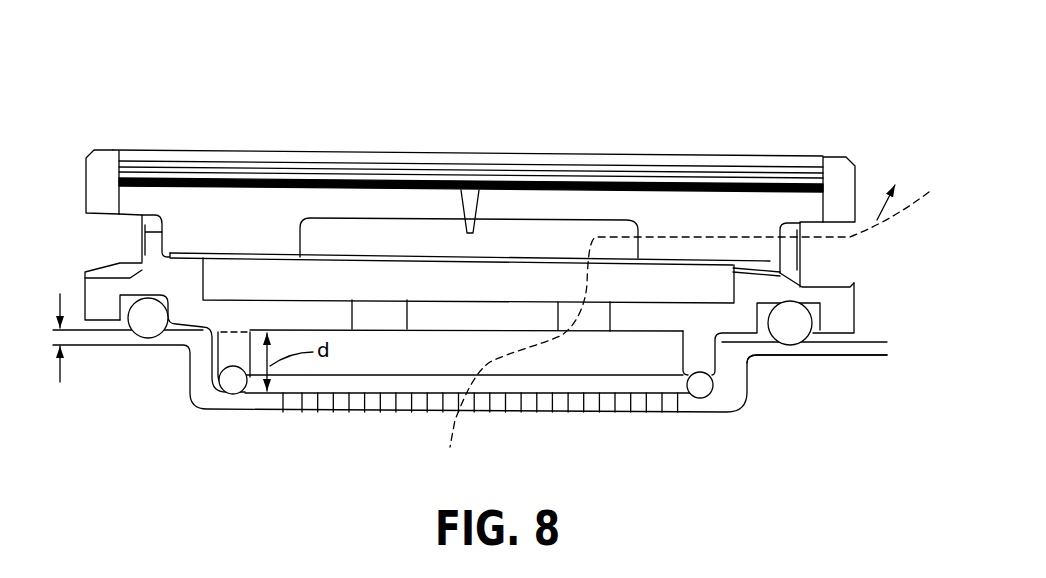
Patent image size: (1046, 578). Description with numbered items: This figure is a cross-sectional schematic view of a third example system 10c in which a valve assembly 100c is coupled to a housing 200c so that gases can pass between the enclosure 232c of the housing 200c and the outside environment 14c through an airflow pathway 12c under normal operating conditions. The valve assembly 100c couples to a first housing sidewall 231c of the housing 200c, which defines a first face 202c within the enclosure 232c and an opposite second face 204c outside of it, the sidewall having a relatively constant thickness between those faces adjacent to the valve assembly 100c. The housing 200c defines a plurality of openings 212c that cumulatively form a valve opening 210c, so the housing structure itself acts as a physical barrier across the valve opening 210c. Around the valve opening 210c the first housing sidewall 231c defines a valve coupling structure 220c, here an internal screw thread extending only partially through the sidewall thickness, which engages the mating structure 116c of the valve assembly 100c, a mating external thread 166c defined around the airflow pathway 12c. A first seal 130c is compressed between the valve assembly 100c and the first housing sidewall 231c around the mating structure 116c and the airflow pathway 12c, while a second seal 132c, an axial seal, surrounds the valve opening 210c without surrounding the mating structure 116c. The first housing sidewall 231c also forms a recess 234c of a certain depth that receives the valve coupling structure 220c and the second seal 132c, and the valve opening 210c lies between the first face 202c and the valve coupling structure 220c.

The system 10c is at (203, 80).
The valve assembly 100c is at (148, 137).
The outside environment 14c is at (805, 90).
The airflow pathway 12c is at (929, 192).
The mating structure 116c is at (683, 360).
The housing 200c is at (863, 340).
The enclosure 232c is at (124, 378).
The second face 204c is at (880, 342).
The recess 234c is at (627, 388).
The first face 202c is at (813, 357).
The valve coupling structure 220c is at (748, 362).
The first housing sidewall 231c is at (884, 349).
The valve opening 210c is at (481, 414).
The openings 212c is at (436, 398).
The first seal 130c is at (793, 316).
The second seal 132c is at (231, 383).
The mating structure 166c is at (722, 362).